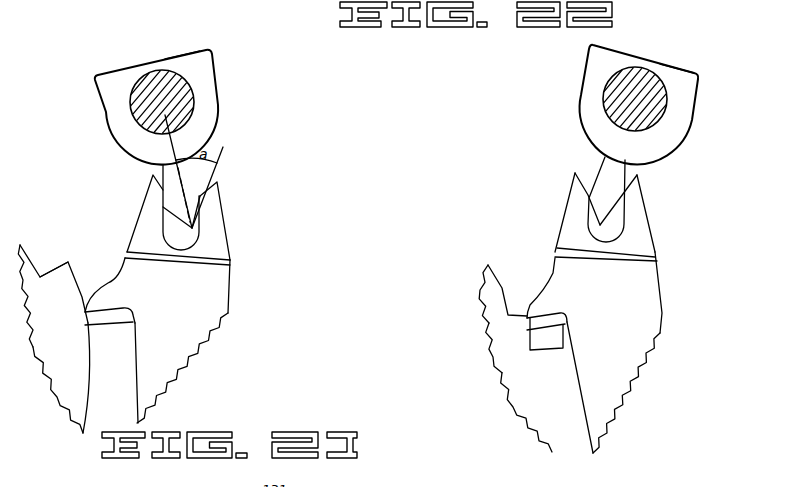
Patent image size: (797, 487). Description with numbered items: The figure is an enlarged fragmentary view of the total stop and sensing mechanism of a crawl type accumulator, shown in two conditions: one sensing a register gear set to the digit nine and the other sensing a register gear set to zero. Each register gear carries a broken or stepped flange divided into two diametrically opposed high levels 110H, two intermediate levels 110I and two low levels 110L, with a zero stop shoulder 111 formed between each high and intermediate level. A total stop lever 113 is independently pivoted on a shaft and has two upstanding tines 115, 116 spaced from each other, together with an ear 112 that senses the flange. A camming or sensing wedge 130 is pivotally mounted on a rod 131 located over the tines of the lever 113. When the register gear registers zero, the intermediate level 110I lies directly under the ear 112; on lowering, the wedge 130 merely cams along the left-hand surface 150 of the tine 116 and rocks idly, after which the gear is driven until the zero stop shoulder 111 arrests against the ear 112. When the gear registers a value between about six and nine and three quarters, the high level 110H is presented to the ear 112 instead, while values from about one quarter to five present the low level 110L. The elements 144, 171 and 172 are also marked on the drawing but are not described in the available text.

In FIG. 21, the high level 110H is at (91, 394).
In FIG. 22, the high level 110H is at (567, 372).
In FIG. 21, the intermediate level 110I is at (38, 262).
In FIG. 22, the intermediate level 110I is at (530, 334).
In FIG. 22, the low level 110L is at (503, 288).
In FIG. 21, the zero stop shoulder 111 is at (33, 278).
In FIG. 22, the zero stop shoulder 111 is at (531, 353).
In FIG. 21, the ear 112 is at (106, 311).
In FIG. 22, the ear 112 is at (546, 314).
In FIG. 21, the total stop lever 113 is at (198, 333).
In FIG. 22, the total stop lever 113 is at (654, 297).
In FIG. 21, the tine 115 is at (143, 204).
In FIG. 22, the tine 115 is at (566, 221).
In FIG. 21, the tine 116 is at (219, 223).
In FIG. 22, the tine 116 is at (644, 220).
In FIG. 21, the sensing wedge 130 is at (211, 108).
In FIG. 22, the sensing wedge 130 is at (684, 121).
In FIG. 21, the rod 131 is at (152, 78).
In FIG. 22, the rod 131 is at (637, 78).
In FIG. 21, the top edge of head 144 is at (183, 53).
In FIG. 22, the top edge of head 144 is at (683, 73).
In FIG. 22, the left-hand surface 150 is at (630, 176).
In FIG. 22, the right arm of V-shaped member 171 is at (619, 215).
In FIG. 22, the left arm of V-shaped member 172 is at (587, 195).